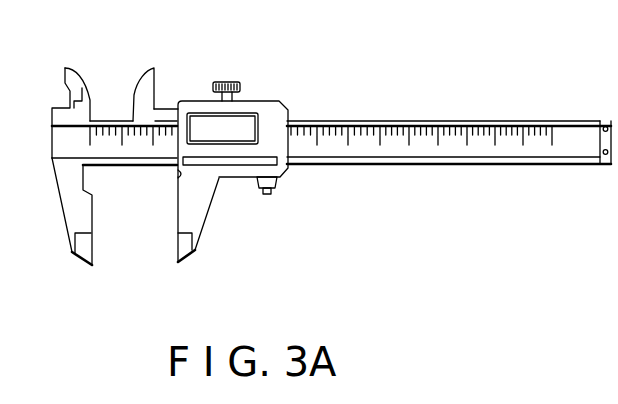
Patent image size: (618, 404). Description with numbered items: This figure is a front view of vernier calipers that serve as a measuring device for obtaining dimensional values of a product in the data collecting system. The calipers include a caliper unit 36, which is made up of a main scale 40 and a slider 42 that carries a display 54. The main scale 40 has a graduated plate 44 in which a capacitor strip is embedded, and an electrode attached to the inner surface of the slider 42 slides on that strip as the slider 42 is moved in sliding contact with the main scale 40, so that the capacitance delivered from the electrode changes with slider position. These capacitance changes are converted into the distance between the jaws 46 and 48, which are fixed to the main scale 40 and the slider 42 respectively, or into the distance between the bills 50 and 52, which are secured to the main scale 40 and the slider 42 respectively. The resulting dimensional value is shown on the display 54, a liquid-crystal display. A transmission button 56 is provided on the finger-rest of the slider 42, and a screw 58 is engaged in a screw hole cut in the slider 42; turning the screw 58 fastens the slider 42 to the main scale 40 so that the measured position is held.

The caliper unit 36 is at (180, 67).
The main scale 40 is at (53, 143).
The slider 42 is at (275, 101).
The graduated plate 44 is at (452, 148).
The jaw 46 is at (78, 263).
The jaw 48 is at (188, 260).
The bill 50 is at (84, 76).
The bill 52 is at (140, 78).
The display 54 is at (240, 145).
The transmission button 56 is at (271, 193).
The screw 58 is at (232, 82).